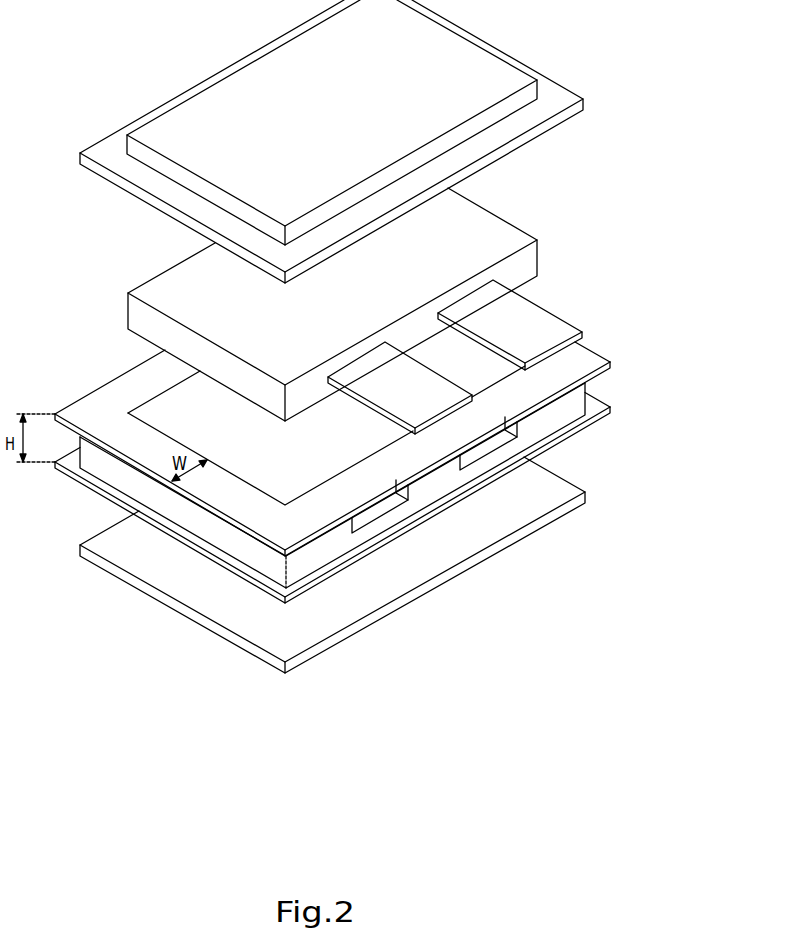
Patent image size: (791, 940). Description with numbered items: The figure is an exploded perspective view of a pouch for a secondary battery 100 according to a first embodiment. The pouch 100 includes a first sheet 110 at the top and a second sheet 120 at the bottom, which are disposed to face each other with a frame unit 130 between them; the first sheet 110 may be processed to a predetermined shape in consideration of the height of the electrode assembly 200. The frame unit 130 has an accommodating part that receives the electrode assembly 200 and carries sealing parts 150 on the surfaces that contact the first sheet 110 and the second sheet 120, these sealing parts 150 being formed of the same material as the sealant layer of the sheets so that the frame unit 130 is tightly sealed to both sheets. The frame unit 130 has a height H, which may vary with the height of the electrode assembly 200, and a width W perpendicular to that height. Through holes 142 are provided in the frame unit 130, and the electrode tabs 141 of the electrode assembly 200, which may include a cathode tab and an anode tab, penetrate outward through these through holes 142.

The pouch for a secondary battery 100 is at (403, 336).
The first sheet 110 is at (586, 98).
The second sheet 120 is at (586, 493).
The frame unit 130 is at (572, 402).
The electrode tabs 141 is at (418, 412).
The through holes 142 is at (510, 429).
The sealing parts 150 is at (596, 358).
The electrode assembly 200 is at (157, 291).